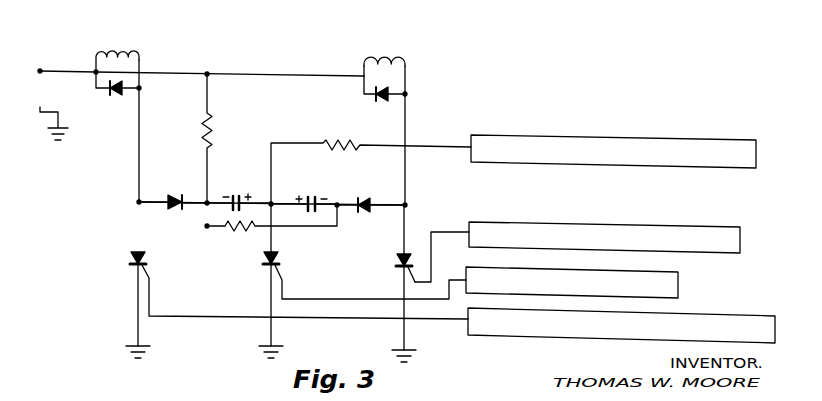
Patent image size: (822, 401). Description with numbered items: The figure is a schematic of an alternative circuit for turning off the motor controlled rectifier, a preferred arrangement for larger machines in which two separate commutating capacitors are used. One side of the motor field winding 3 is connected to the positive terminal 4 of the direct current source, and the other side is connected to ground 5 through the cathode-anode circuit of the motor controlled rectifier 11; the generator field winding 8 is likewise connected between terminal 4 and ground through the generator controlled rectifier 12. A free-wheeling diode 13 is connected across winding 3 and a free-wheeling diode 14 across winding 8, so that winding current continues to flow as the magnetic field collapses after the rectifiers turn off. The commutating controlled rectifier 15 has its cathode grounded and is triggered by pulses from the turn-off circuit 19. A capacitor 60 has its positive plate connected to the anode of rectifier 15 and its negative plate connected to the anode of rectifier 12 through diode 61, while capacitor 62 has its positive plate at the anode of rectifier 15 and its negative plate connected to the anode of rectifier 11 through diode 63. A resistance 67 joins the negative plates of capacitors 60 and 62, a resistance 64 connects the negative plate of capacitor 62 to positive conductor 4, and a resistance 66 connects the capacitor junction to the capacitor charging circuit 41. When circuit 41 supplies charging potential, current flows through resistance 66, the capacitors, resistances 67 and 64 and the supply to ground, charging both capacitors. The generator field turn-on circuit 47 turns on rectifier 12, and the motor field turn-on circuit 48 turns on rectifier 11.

The motor field winding 3 is at (119, 51).
The terminal 4 is at (40, 71).
The ground connection 5 is at (46, 123).
The generator field winding 8 is at (389, 58).
The motor controlled rectifier 11 is at (130, 256).
The generator controlled rectifier 12 is at (396, 261).
The free-wheeling diode 13 is at (114, 96).
The free-wheeling diode 14 is at (372, 98).
The commutating controlled rectifier 15 is at (283, 257).
The turn-off circuit 19 is at (679, 285).
The capacitor charging circuit 41 is at (512, 135).
The generator field turn-on circuit 47 is at (505, 222).
The motor field turn-on circuit 48 is at (708, 319).
The capacitor 60 is at (315, 197).
The diode 61 is at (364, 200).
The capacitor 62 is at (238, 196).
The diode 63 is at (172, 195).
The resistance 64 is at (210, 116).
The resistance 66 is at (330, 142).
The resistance 67 is at (246, 229).